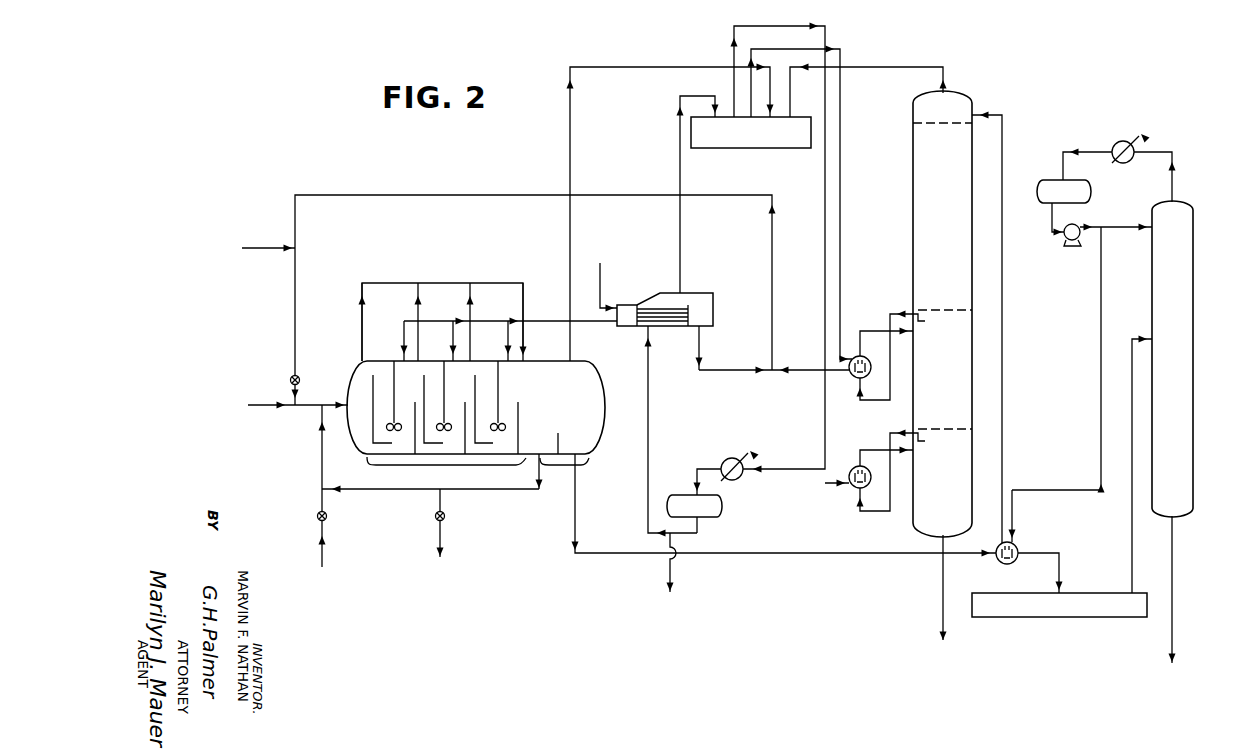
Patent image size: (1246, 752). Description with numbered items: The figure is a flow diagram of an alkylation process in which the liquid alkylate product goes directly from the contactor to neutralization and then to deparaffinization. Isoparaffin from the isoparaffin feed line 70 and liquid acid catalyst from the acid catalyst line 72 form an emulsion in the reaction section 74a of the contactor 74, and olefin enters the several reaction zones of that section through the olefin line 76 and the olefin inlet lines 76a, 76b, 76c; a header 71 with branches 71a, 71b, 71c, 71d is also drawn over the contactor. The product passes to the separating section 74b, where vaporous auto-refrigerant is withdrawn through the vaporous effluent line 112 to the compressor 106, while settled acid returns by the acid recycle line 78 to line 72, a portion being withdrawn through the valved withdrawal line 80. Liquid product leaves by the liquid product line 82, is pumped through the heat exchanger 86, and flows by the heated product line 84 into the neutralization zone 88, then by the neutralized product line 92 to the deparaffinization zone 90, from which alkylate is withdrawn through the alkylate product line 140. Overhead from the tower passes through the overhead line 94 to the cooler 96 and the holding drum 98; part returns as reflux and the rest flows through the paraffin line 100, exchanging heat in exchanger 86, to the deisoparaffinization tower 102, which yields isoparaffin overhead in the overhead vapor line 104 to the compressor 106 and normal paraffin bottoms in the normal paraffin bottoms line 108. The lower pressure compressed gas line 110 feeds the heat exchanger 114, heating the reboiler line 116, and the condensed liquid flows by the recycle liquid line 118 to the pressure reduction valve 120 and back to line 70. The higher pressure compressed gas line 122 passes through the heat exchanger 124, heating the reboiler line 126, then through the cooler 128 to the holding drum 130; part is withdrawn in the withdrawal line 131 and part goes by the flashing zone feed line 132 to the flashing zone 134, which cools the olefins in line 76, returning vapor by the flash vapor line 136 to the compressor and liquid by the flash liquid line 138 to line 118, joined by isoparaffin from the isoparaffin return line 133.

The isoparaffin feed line 70 is at (306, 406).
The catalyst distribution header 71 is at (440, 283).
The catalyst inlet line 71a is at (362, 310).
The catalyst inlet line 71b is at (418, 310).
The catalyst inlet line 71c is at (470, 310).
The catalyst inlet line 71d is at (523, 310).
The acid catalyst line 72 is at (312, 538).
The contactor 74 is at (486, 407).
The reaction section 74a is at (446, 472).
The separating section 74b is at (552, 462).
The olefin line 76 is at (585, 322).
The olefin inlet line 76a is at (403, 331).
The olefin inlet line 76b is at (452, 337).
The olefin inlet line 76c is at (507, 337).
The acid recycle line 78 is at (463, 493).
The valved withdrawal line 80 is at (441, 535).
The liquid product line 82 is at (634, 554).
The heated product line 84 is at (1065, 560).
The heat exchanger 86 is at (1015, 545).
The neutralization zone 88 is at (1068, 617).
The deparaffinization zone 90 is at (1190, 291).
The neutralized product line 92 is at (1133, 526).
The overhead line 94 is at (1170, 186).
The cooler 96 is at (1115, 143).
The holding drum 98 is at (1054, 180).
The paraffin line 100 is at (1003, 318).
The deisoparaffinization tower 102 is at (912, 227).
The overhead vapor line 104 is at (890, 63).
The compressor 106 is at (773, 148).
The normal paraffin bottoms line 108 is at (934, 580).
The lower pressure compressed gas line 110 is at (781, 49).
The vaporous effluent line 112 is at (570, 215).
The heat exchanger 114 is at (855, 375).
The reboiler line 116 is at (870, 331).
The recycle liquid line 118 is at (428, 195).
The pressure reduction valve 120 is at (300, 378).
The higher pressure compressed gas line 122 is at (797, 468).
The heat exchanger 124 is at (852, 487).
The reboiler line 126 is at (871, 512).
The cooler 128 is at (738, 479).
The holding drum 130 is at (710, 518).
The withdrawal line 131 is at (672, 572).
The flashing zone feed line 132 is at (647, 500).
The isoparaffin return line 133 is at (268, 248).
The flashing zone 134 is at (701, 292).
The flash vapor line 136 is at (681, 220).
The flash liquid line 138 is at (731, 371).
The alkylate product line 140 is at (1174, 562).